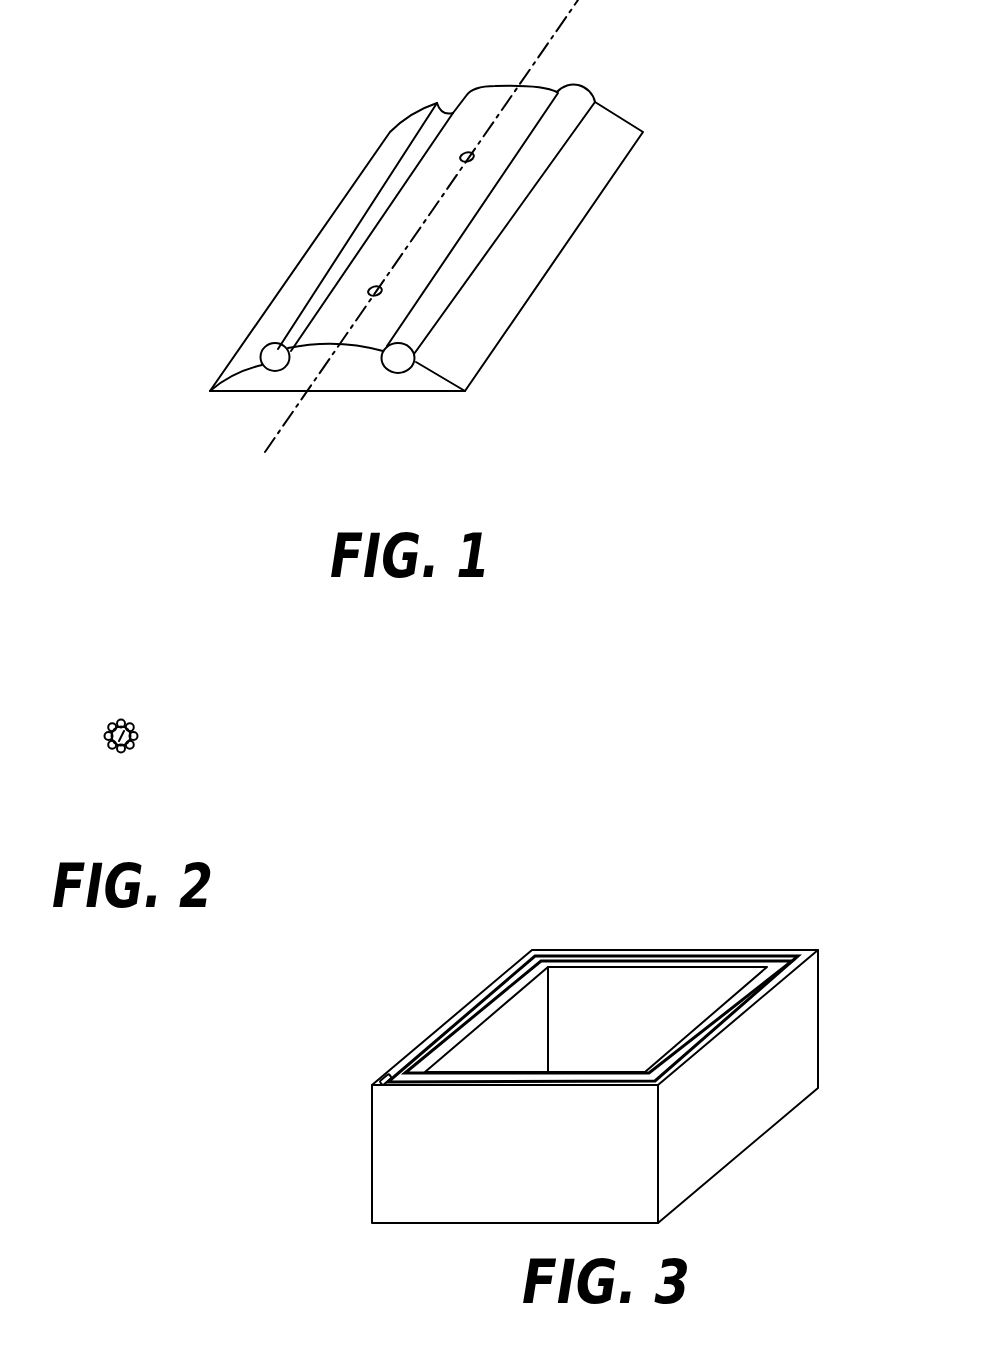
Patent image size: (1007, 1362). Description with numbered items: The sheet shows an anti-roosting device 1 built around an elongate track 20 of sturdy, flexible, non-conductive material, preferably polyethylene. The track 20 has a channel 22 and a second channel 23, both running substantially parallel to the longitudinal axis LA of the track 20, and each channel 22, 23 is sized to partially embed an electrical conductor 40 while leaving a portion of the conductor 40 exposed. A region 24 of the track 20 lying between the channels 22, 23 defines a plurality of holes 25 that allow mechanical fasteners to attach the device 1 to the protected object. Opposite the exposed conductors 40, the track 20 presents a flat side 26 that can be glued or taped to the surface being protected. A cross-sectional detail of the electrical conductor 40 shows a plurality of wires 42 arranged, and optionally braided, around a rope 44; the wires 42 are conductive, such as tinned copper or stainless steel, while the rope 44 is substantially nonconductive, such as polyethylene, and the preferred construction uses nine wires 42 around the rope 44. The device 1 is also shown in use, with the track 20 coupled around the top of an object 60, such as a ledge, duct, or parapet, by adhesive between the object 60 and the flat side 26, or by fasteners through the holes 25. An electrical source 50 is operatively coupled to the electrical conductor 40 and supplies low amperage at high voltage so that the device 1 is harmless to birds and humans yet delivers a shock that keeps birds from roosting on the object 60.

In FIG. 1, the anti-roosting device 1 is at (138, 151).
In FIG. 3, the anti-roosting device 1 is at (513, 977).
In FIG. 1, the elongate track 20 is at (483, 324).
In FIG. 1, the channel 22 is at (397, 374).
In FIG. 1, the second channel 23 is at (260, 350).
In FIG. 1, the region 24 is at (495, 91).
In FIG. 1, the holes 25 is at (375, 287).
In FIG. 1, the flat side 26 is at (430, 420).
In FIG. 1, the electrical conductor 40 is at (535, 156).
In FIG. 2, the electrical conductor 40 is at (88, 710).
In FIG. 2, the wires 42 is at (125, 752).
In FIG. 2, the rope 44 is at (134, 727).
In FIG. 3, the electrical source 50 is at (381, 1079).
In FIG. 3, the object 60 is at (731, 1126).
In FIG. 1, the longitudinal axis LA is at (560, 22).